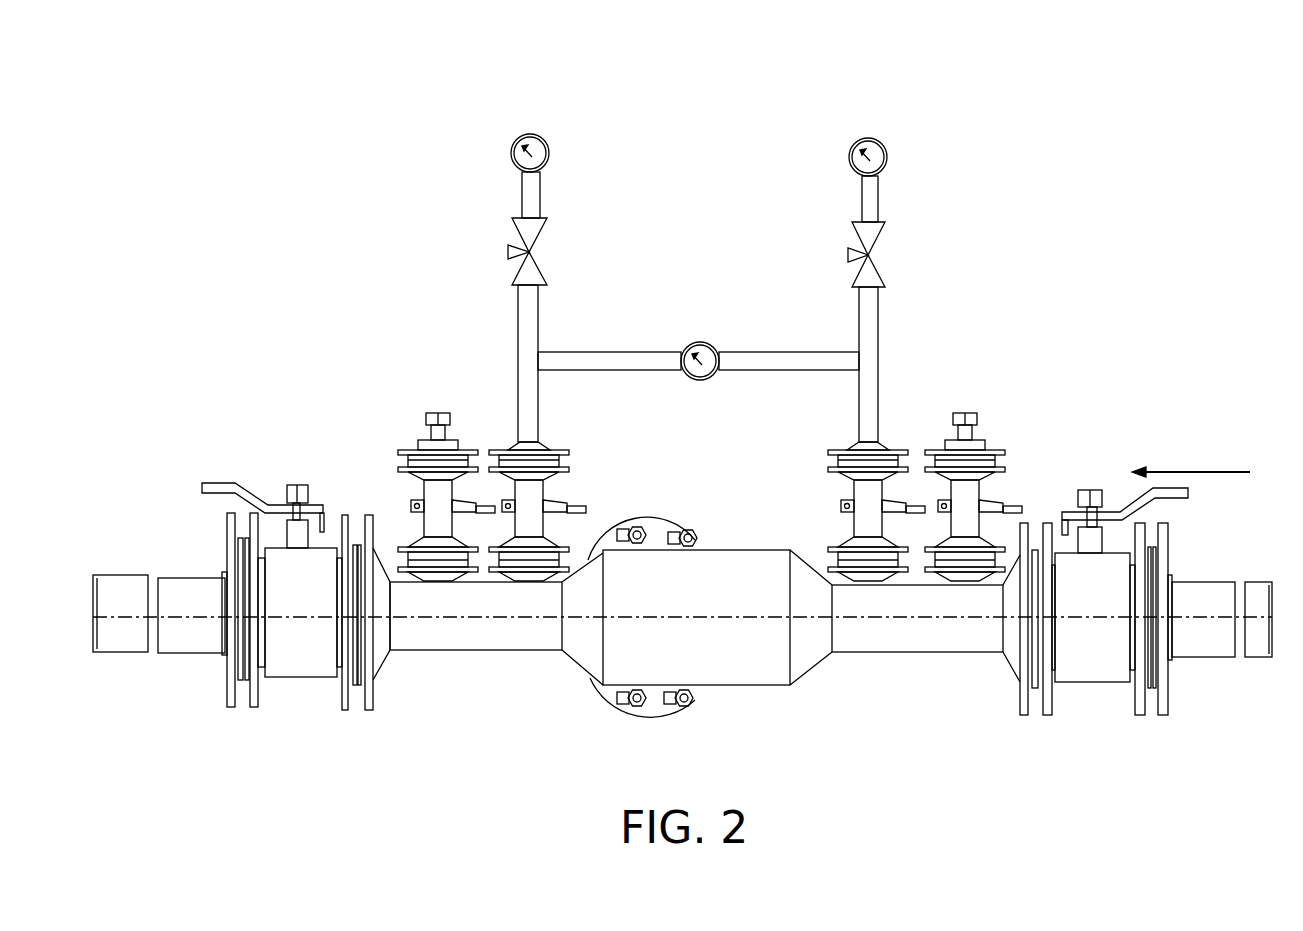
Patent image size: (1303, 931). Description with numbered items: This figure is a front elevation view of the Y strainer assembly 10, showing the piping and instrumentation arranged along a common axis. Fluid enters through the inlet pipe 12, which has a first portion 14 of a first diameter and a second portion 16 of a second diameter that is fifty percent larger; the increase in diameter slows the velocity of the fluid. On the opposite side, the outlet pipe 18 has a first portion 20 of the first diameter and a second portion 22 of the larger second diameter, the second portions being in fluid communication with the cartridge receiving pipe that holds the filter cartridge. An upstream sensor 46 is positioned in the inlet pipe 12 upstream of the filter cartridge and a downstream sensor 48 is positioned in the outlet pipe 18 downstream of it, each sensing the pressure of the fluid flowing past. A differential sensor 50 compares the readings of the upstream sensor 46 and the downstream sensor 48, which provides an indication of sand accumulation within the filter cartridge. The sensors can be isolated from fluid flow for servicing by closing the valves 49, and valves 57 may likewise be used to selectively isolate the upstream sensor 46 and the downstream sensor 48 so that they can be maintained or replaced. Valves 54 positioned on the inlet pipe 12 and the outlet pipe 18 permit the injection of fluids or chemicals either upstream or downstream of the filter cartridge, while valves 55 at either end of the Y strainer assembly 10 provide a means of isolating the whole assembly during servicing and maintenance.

The Y strainer assembly 10 is at (686, 412).
The inlet pipe 12 is at (975, 650).
The first portion of inlet pipe 14 is at (933, 650).
The second portion of inlet pipe 16 is at (782, 680).
The outlet pipe 18 is at (428, 650).
The first portion of outlet pipe 20 is at (482, 650).
The second portion of outlet pipe 22 is at (607, 705).
The upstream sensor 46 is at (887, 152).
The downstream sensor 48 is at (511, 153).
The valves 49 is at (850, 258).
The differential sensor 50 is at (700, 341).
The valves 54 is at (428, 518).
The valves 55 is at (297, 672).
The valves 57 is at (853, 523).